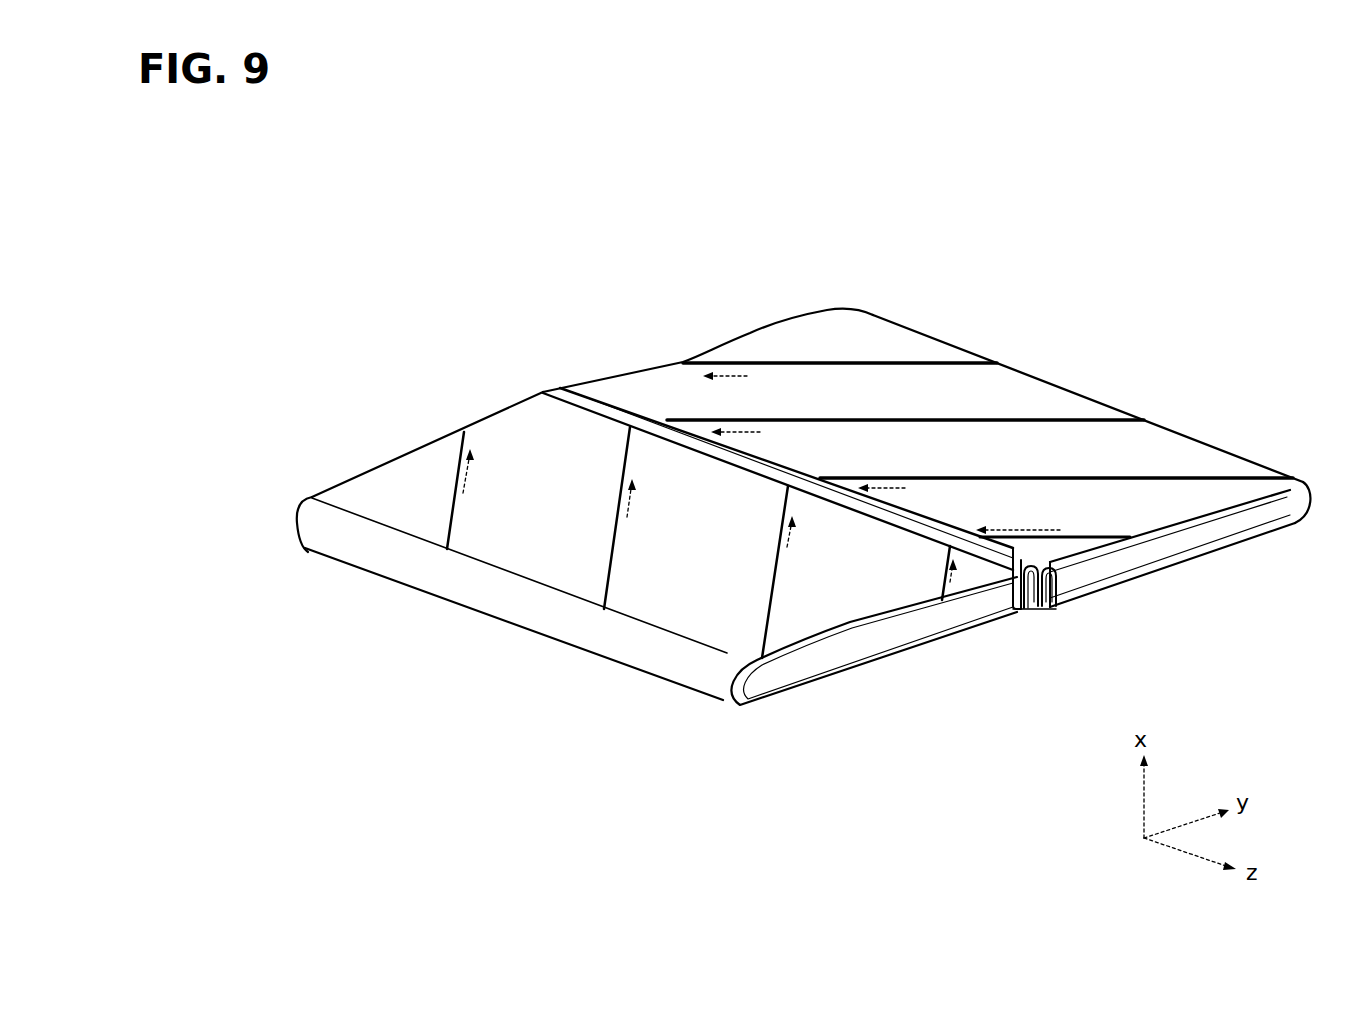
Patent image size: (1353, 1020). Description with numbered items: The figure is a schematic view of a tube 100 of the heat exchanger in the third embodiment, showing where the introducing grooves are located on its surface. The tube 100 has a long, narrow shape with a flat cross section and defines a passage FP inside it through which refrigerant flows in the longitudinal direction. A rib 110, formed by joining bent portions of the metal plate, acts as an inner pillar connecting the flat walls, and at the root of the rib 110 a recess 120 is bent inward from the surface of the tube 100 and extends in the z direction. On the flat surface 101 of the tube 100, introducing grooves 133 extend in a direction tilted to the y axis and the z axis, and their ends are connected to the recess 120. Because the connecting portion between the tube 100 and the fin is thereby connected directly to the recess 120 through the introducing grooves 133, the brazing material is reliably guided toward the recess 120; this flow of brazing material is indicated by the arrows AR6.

The tube 100 is at (485, 602).
The flat surface 101 is at (1255, 468).
The rib 110 is at (1006, 606).
The recess 120 is at (1005, 565).
The introducing grooves 133 is at (930, 363).
The arrows AR6 is at (467, 485).
The passage FP is at (818, 664).